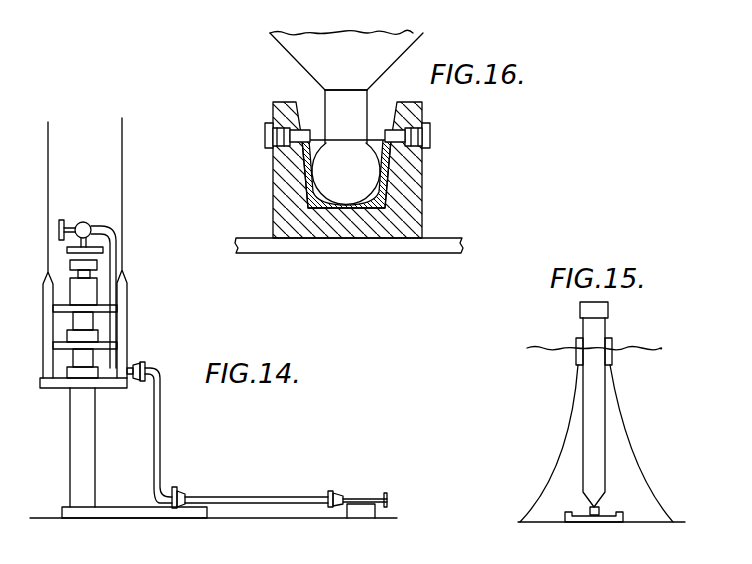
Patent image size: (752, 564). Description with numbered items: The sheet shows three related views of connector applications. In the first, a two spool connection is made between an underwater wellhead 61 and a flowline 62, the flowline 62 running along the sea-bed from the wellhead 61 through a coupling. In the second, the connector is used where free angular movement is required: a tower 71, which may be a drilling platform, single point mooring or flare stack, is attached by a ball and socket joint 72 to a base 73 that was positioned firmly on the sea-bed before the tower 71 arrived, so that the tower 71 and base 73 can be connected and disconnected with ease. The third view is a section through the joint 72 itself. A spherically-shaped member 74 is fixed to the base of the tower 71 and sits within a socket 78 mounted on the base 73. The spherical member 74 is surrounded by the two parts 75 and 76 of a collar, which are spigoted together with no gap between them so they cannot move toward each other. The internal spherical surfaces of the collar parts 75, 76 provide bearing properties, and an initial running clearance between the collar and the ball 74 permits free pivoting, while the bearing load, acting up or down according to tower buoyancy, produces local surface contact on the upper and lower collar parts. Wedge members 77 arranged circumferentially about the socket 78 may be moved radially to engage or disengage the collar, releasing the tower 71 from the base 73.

In FIG. 14, the underwater wellhead 61 is at (85, 322).
In FIG. 14, the flowline 62 is at (372, 497).
In FIG. 16, the tower 71 is at (341, 48).
In FIG. 15, the tower 71 is at (593, 391).
In FIG. 15, the ball and socket joint 72 is at (592, 512).
In FIG. 16, the base 73 is at (439, 248).
In FIG. 15, the base 73 is at (607, 517).
In FIG. 16, the spherically-shaped member 74 is at (366, 176).
In FIG. 16, the collar part 75 is at (388, 150).
In FIG. 16, the collar part 76 is at (372, 198).
In FIG. 16, the wedge members 77 is at (298, 126).
In FIG. 16, the socket 78 is at (281, 169).